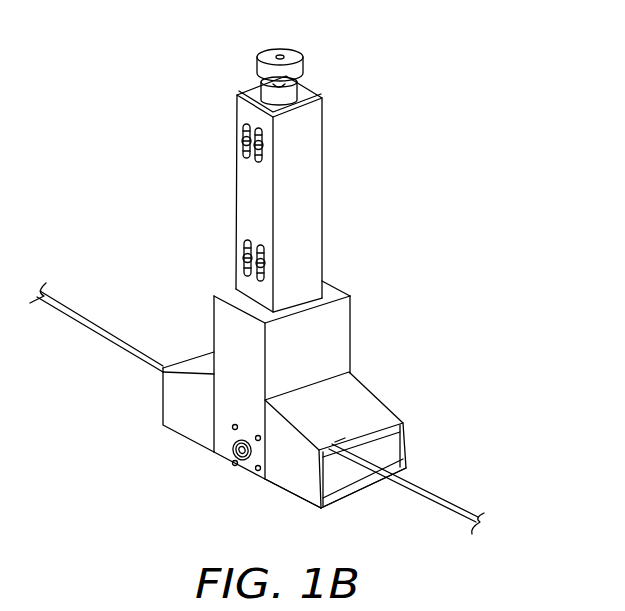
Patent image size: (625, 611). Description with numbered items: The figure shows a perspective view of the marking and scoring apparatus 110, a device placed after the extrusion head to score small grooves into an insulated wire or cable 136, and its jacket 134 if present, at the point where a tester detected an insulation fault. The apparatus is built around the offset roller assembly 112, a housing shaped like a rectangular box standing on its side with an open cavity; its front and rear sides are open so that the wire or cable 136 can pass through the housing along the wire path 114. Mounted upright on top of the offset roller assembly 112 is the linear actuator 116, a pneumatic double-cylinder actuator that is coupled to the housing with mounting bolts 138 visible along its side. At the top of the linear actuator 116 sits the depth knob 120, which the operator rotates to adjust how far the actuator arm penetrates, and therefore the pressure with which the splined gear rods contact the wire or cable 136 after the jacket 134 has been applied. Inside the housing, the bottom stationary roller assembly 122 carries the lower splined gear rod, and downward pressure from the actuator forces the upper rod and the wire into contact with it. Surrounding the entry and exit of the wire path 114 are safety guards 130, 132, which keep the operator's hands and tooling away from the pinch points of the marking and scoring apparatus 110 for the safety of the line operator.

The marking and scoring apparatus 110 is at (422, 84).
The offset roller assembly (housing) 112 is at (228, 322).
The wire path 114 is at (392, 443).
The linear actuator 116 is at (336, 190).
The depth knob 120 is at (236, 58).
The bottom stationary roller assembly 122 is at (220, 455).
The safety guard 130 is at (165, 410).
The safety guard 132 is at (284, 487).
The jacket 134 is at (443, 486).
The wire or cable 136 is at (495, 536).
The mounting bolts 138 is at (230, 133).